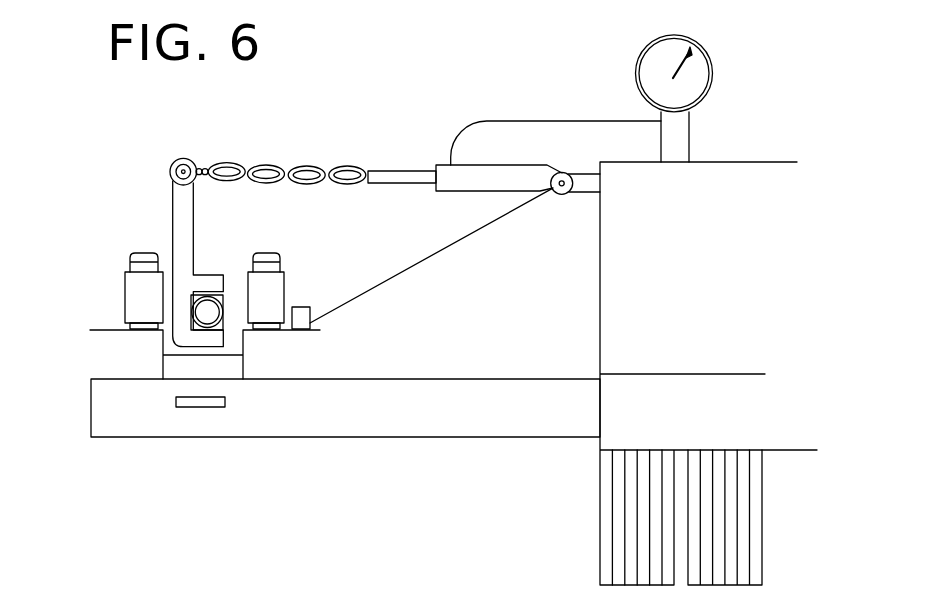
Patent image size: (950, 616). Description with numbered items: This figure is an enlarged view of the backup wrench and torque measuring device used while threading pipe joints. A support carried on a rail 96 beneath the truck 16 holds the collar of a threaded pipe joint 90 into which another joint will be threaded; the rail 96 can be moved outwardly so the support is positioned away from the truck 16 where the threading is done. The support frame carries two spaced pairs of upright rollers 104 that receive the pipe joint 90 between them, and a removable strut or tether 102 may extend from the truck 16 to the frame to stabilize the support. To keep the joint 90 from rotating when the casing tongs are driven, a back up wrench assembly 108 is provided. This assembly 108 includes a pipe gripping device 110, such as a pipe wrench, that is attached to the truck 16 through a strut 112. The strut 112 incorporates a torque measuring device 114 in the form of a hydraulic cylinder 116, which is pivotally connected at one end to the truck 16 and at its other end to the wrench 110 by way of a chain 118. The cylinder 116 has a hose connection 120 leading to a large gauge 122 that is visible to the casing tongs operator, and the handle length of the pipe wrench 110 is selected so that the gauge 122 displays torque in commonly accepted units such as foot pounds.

The truck 16 is at (592, 303).
The threaded pipe joint 90 is at (223, 300).
The rail 96 is at (101, 396).
The strut or tether 102 is at (430, 253).
The upright rollers 104 is at (133, 297).
The back up wrench assembly 108 is at (407, 165).
The pipe gripping device 110 is at (182, 223).
The strut 112 is at (316, 165).
The torque measuring device 114 is at (457, 192).
The hydraulic cylinder 116 is at (485, 182).
The chain 118 is at (223, 165).
The hose connection 120 is at (535, 133).
The gauge 122 is at (648, 62).